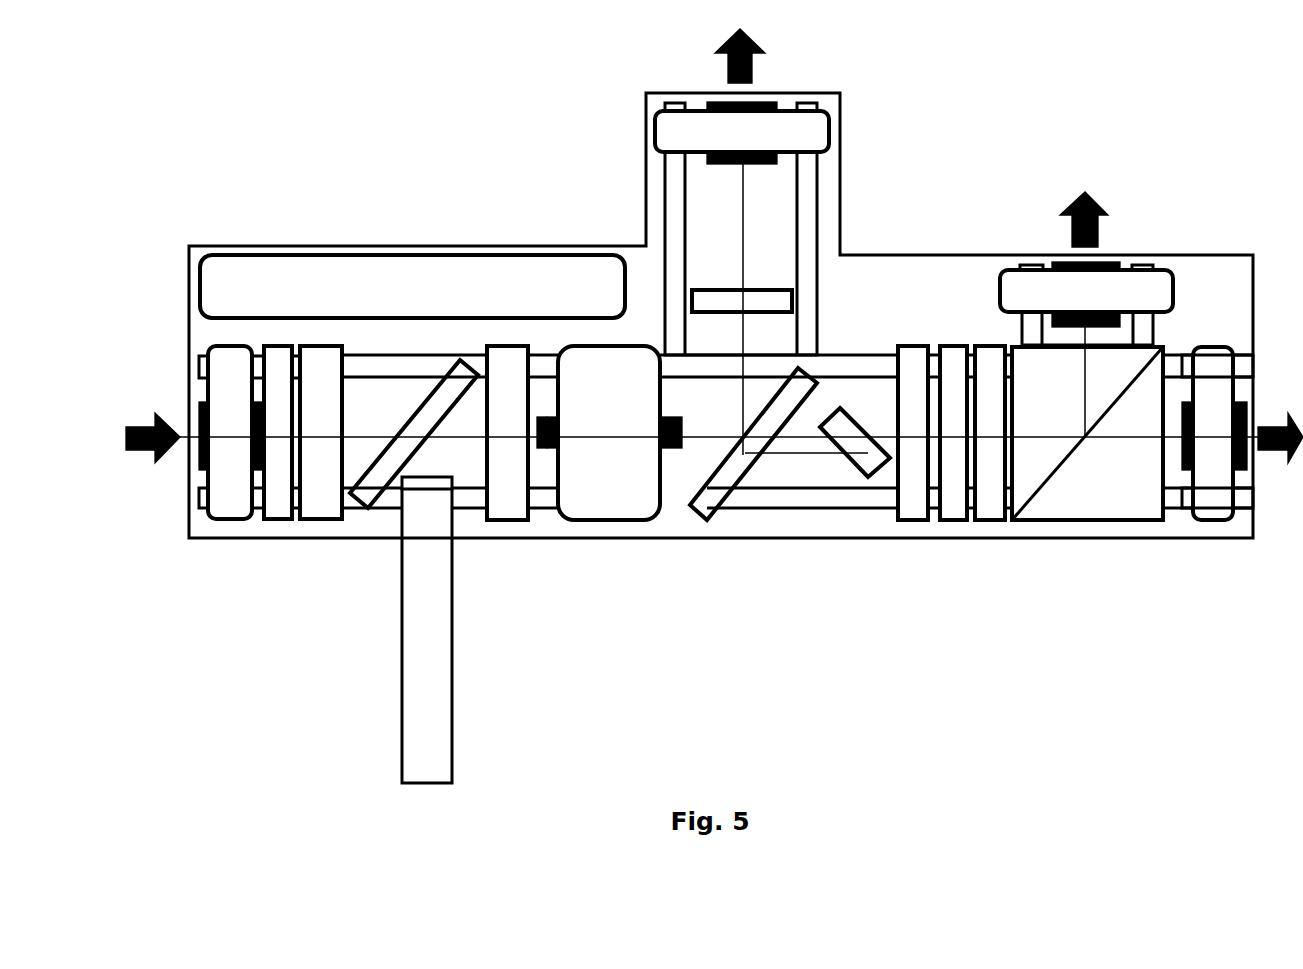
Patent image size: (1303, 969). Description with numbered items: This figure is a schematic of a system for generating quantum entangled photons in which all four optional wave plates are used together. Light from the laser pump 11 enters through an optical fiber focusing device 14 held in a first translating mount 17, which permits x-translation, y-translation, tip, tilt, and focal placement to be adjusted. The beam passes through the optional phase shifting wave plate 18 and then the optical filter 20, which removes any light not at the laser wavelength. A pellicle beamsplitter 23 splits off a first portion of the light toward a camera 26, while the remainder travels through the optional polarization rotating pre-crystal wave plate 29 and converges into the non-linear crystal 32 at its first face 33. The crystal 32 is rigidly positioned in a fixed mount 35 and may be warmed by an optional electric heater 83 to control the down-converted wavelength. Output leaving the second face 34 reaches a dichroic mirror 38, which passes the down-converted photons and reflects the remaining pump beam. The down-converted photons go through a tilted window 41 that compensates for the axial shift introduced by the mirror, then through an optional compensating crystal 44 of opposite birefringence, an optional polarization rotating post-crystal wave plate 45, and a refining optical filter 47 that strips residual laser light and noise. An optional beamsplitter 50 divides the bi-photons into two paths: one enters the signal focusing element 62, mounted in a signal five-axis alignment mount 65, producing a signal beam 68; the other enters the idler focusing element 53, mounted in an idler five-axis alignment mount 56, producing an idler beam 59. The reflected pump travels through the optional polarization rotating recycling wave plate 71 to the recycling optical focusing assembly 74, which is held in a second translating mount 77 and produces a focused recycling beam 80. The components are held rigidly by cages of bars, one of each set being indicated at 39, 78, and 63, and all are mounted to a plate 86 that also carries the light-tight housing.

The laser pump 11 is at (138, 458).
The optical fiber focusing device 14 is at (197, 470).
The first translating mount 17 is at (229, 530).
The optional phase shifting wave plate 18 is at (280, 530).
The optical filter 20 is at (320, 530).
The pellicle beamsplitter 23 is at (372, 488).
The camera 26 is at (462, 758).
The optional polarization rotating pre-crystal wave plate 29 is at (513, 530).
The non-linear crystal 32 is at (554, 460).
The first face 33 is at (540, 453).
The second face 34 is at (684, 460).
The fixed mount 35 is at (613, 530).
The dichroic mirror 38 is at (712, 498).
The bar of first cage 39 is at (788, 498).
The tilted window 41 is at (868, 437).
The optional compensating crystal 44 is at (917, 530).
The optional polarization rotating post-crystal wave plate 45 is at (955, 530).
The refining optical filter 47 is at (990, 530).
The optional beamsplitter 50 is at (1083, 530).
The idler focusing element 53 is at (1183, 478).
The idler 5-axis alignment mount 56 is at (1213, 530).
The idler beam 59 is at (1285, 468).
The signal focusing element 62 is at (1123, 264).
The bar of third cage 63 is at (1017, 328).
The signal 5-axis alignment mount 65 is at (1008, 280).
The signal beam 68 is at (1112, 204).
The optional polarization rotating recycling wave plate 71 is at (695, 285).
The recycling optical focusing assembly 74 is at (702, 159).
The second translating mount 77 is at (668, 130).
The bar of second cage 78 is at (812, 185).
The focused recycling beam 80 is at (703, 62).
The optional electric heater 83 is at (403, 275).
The plate 86 is at (200, 236).